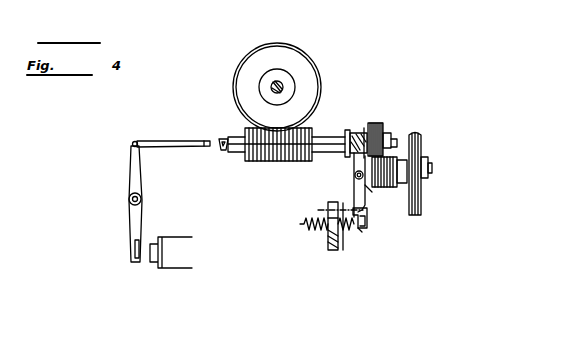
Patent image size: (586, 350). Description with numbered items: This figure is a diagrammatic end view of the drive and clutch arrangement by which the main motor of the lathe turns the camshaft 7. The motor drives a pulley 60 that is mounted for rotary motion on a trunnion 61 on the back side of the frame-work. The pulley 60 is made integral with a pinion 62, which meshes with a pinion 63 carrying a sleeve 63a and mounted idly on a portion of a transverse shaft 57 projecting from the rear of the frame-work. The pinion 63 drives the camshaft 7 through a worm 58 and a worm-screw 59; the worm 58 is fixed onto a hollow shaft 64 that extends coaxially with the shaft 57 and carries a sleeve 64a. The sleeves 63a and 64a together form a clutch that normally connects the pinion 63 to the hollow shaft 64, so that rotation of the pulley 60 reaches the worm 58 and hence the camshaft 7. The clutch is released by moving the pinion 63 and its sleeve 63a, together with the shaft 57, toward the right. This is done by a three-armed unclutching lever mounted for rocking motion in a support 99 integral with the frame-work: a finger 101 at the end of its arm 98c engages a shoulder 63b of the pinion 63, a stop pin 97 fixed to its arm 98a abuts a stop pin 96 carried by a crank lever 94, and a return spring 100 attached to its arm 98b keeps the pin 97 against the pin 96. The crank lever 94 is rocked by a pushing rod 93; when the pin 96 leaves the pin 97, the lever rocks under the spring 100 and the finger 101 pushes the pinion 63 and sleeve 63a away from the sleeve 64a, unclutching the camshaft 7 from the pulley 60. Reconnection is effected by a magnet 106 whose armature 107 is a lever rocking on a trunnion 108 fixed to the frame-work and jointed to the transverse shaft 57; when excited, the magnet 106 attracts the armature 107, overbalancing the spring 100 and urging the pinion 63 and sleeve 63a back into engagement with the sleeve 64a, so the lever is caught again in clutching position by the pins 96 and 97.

The camshaft 7 is at (277, 81).
The worm-screw 59 is at (299, 52).
The transverse shaft 57 is at (221, 150).
The worm 58 is at (270, 162).
The hollow shaft 64 is at (329, 140).
The sleeve 64a is at (347, 131).
The finger 101 is at (361, 134).
The pinion 63 is at (384, 128).
The sleeve 63a is at (366, 130).
The shoulder 63b is at (380, 125).
The pinion 62 is at (389, 162).
The trunnion 61 is at (427, 167).
The pulley 60 is at (413, 197).
The arm of unclutching lever 98c is at (352, 172).
The support 99 is at (363, 180).
The arm of unclutching lever 98a is at (366, 205).
The stop pin 97 is at (362, 222).
The arm of unclutching lever 98b is at (360, 236).
The pushing rod 93 is at (333, 240).
The crank lever 94 is at (329, 233).
The stop pin 96 is at (344, 230).
The return spring 100 is at (303, 226).
The magnet 106 is at (184, 266).
The armature 107 is at (133, 232).
The trunnion 108 is at (129, 200).